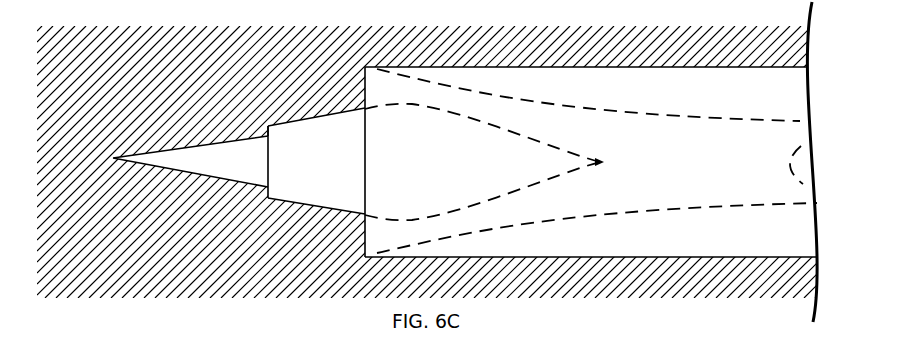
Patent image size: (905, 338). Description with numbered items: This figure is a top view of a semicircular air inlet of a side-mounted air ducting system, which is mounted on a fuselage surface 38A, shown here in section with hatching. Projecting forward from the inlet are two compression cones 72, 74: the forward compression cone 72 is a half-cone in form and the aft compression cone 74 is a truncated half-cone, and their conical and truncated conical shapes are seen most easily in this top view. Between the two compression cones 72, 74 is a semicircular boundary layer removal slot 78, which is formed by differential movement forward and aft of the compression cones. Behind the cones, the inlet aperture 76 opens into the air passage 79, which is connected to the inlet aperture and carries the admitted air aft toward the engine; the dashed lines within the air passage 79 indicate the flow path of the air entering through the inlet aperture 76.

The fuselage surface 38A is at (134, 100).
The compression cone 72 is at (202, 157).
The compression cone 74 is at (327, 128).
The inlet aperture 76 is at (358, 91).
The semicircular boundary layer removal slot 78 is at (267, 135).
The air passage 79 is at (689, 172).